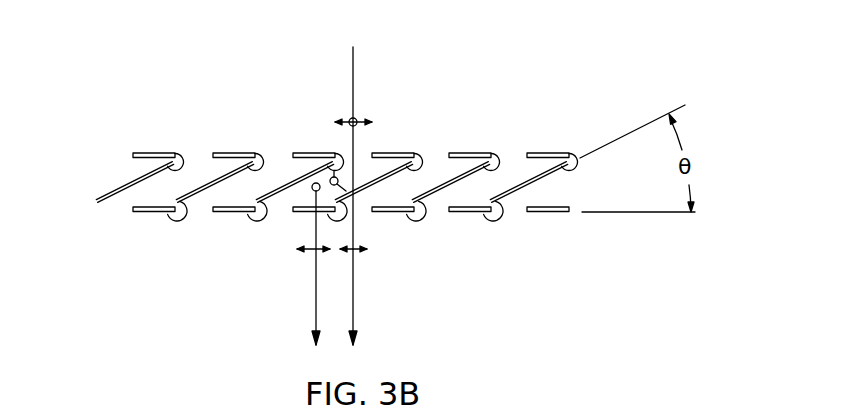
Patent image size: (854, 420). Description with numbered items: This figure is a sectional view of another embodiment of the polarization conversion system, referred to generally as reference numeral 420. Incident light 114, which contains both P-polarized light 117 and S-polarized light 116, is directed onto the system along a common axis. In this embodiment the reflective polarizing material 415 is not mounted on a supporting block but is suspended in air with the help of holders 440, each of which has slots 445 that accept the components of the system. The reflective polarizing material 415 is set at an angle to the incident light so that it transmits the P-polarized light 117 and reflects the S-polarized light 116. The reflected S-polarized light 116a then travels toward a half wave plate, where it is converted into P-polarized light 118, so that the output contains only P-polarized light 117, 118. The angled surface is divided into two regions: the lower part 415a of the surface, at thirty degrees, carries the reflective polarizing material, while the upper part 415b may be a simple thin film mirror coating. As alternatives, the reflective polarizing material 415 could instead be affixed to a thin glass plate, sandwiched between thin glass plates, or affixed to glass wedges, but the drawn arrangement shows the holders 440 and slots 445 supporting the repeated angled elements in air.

The polarization conversion system embodiment 420 is at (607, 92).
The incident light 114 is at (357, 98).
The S-polarized light 116 is at (341, 158).
The reflected S-polarized light 116a is at (312, 188).
The reflective polarizing material 415 is at (417, 227).
The lower part of the reflective polarizing material surface 415a is at (378, 187).
The upper part of the reflective polarizing material surface 415b is at (305, 178).
The slots 445 is at (162, 210).
The holders 440 is at (168, 218).
The P-polarized light 117 is at (353, 312).
The converted P-polarized light 118 is at (316, 312).